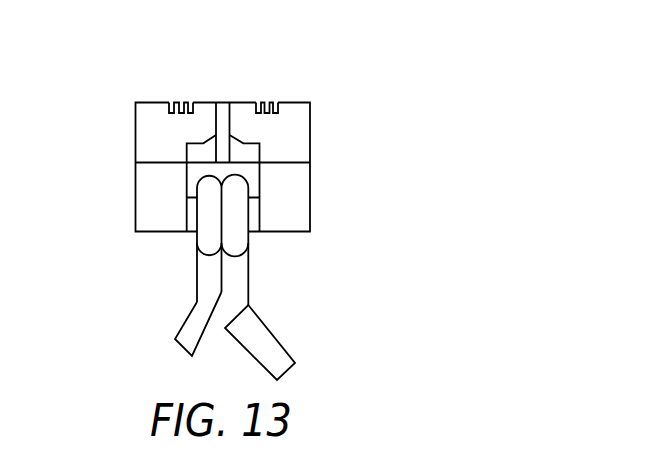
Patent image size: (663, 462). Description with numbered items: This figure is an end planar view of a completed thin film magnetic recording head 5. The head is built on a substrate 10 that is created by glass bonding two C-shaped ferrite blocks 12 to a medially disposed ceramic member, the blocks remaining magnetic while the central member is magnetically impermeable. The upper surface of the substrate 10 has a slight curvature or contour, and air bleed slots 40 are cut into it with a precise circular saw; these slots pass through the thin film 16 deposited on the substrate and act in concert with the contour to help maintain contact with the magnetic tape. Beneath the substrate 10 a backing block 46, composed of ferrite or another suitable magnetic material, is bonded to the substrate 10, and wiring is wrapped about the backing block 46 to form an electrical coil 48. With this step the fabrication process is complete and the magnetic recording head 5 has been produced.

The magnetic recording head 5 is at (436, 66).
The substrate 10 is at (150, 132).
The C-shaped ferrite blocks 12 is at (148, 106).
The thin film 16 is at (198, 102).
The air bleed slots 40 is at (174, 86).
The backing block 46 is at (300, 197).
The electrical coil 48 is at (270, 360).